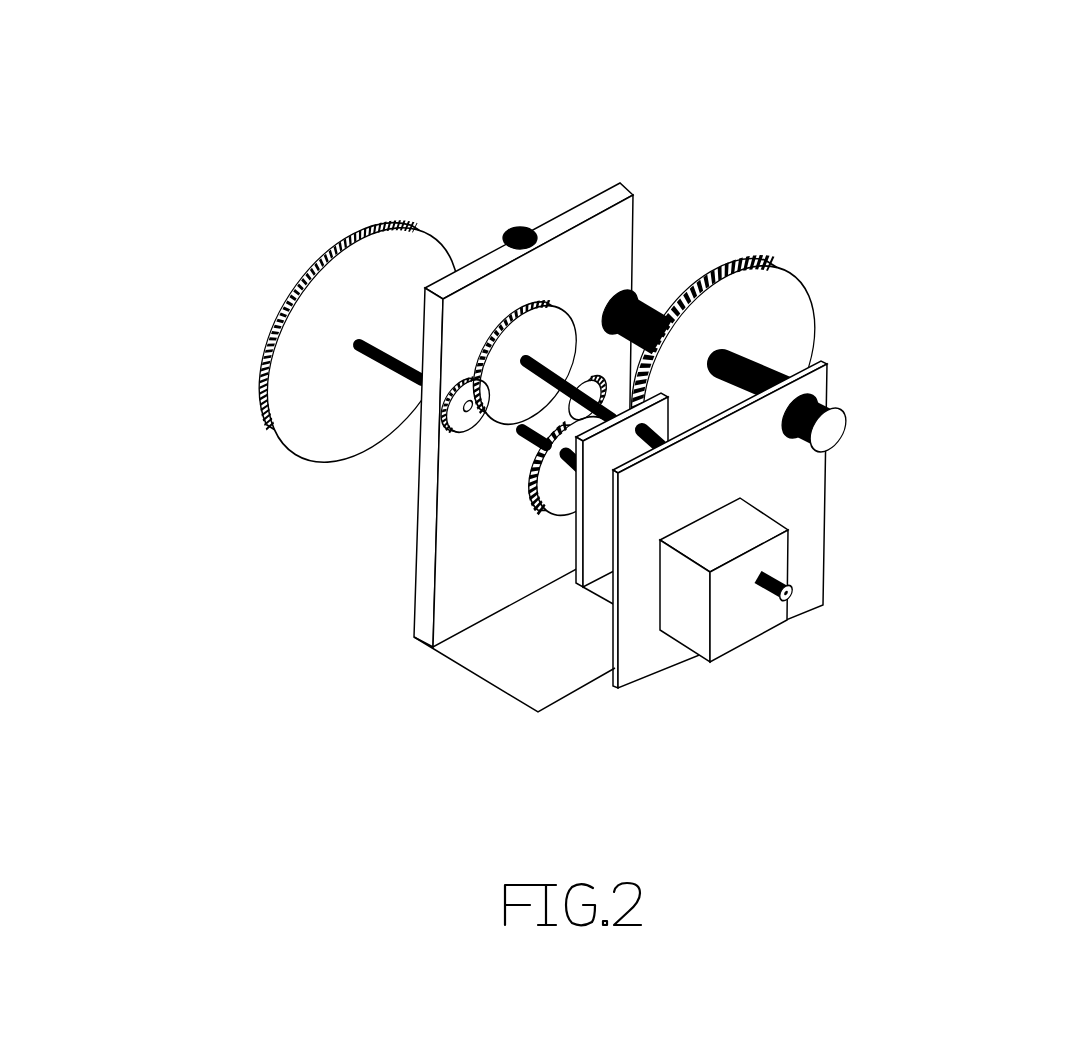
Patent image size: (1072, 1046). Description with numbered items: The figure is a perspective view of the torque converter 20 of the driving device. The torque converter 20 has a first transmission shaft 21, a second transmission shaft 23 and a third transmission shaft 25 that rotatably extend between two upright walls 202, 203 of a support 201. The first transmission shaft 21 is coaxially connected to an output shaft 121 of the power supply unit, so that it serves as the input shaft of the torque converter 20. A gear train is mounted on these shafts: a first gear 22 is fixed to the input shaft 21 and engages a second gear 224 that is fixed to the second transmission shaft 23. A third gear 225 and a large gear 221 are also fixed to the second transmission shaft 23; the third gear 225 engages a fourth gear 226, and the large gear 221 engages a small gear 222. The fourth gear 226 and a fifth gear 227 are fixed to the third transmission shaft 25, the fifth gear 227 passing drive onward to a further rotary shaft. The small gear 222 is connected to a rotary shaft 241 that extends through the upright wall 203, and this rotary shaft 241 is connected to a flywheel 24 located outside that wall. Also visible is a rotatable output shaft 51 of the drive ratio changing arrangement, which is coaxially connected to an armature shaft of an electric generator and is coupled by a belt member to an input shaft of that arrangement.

The torque converter 20 is at (956, 336).
The first transmission shaft 21 is at (690, 253).
The first gear 22 is at (750, 308).
The second transmission shaft 23 is at (618, 284).
The flywheel 24 is at (358, 269).
The third transmission shaft 25 is at (385, 563).
The output shaft 51 is at (819, 580).
The output shaft 121 is at (568, 148).
The support 201 is at (514, 729).
The upright wall 202 is at (817, 428).
The upright wall 203 is at (571, 359).
The large gear 221 is at (502, 295).
The small gear 222 is at (350, 465).
The second gear 224 is at (784, 294).
The third gear 225 is at (417, 499).
The fourth gear 226 is at (456, 553).
The fifth gear 227 is at (478, 611).
The rotary shaft 241 is at (278, 439).